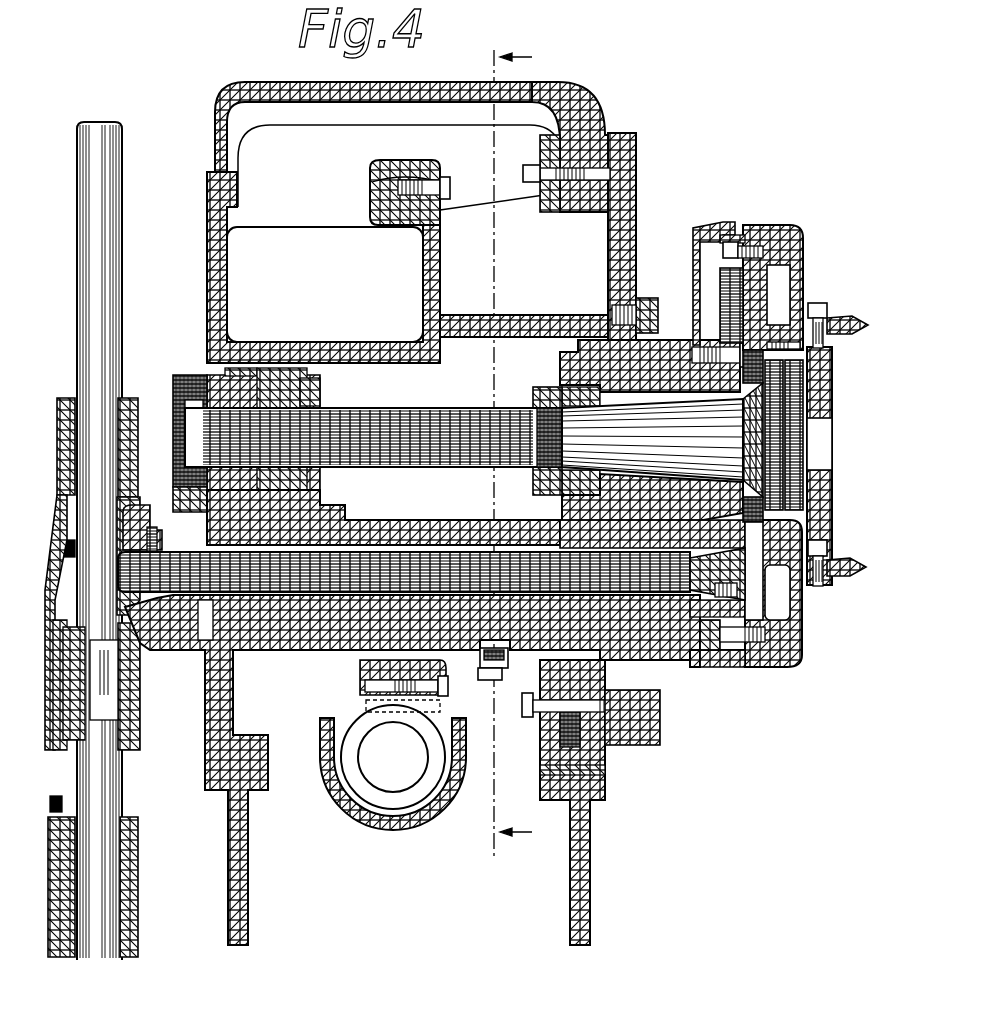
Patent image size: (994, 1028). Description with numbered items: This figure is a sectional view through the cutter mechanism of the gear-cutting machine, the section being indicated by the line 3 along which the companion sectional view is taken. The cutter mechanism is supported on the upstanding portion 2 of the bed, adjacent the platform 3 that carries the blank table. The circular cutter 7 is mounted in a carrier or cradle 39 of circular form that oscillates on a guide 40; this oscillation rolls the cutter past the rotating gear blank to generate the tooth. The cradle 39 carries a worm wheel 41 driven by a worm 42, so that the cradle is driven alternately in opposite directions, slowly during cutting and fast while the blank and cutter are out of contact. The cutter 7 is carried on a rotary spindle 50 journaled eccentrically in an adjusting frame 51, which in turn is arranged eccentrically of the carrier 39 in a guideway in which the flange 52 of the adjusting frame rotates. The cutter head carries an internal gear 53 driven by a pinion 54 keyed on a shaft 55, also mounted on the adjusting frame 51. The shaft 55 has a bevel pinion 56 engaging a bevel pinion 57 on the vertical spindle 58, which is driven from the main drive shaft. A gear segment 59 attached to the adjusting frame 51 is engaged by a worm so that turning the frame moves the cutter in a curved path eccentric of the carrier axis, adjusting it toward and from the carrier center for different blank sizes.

The upstanding portion 2 is at (315, 93).
The platform 3 is at (506, 456).
The circular cutter 7 is at (825, 306).
The carrier or cradle 39 is at (632, 199).
The guide 40 is at (608, 137).
The worm wheel 41 is at (368, 192).
The worm 42 is at (372, 797).
The rotary spindle 50 is at (459, 421).
The adjusting frame 51 is at (642, 360).
The flange 52 is at (650, 740).
The internal gear 53 is at (736, 292).
The pinion 54 is at (735, 655).
The shaft 55 is at (441, 562).
The bevel pinion 56 is at (182, 540).
The bevel pinion 57 is at (152, 640).
The vertical spindle 58 is at (116, 326).
The gear segment 59 is at (496, 686).